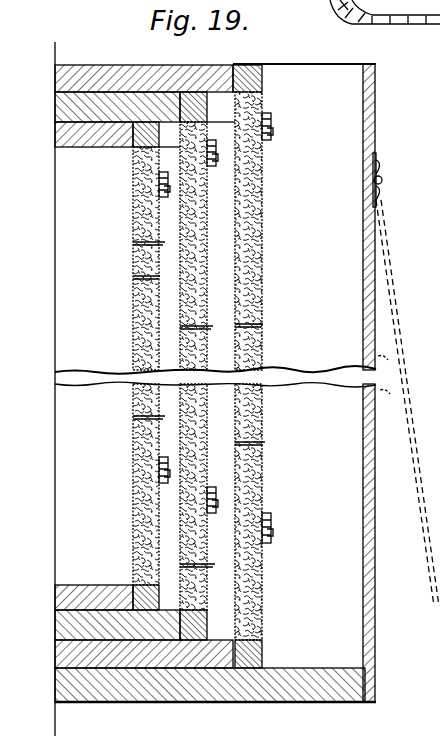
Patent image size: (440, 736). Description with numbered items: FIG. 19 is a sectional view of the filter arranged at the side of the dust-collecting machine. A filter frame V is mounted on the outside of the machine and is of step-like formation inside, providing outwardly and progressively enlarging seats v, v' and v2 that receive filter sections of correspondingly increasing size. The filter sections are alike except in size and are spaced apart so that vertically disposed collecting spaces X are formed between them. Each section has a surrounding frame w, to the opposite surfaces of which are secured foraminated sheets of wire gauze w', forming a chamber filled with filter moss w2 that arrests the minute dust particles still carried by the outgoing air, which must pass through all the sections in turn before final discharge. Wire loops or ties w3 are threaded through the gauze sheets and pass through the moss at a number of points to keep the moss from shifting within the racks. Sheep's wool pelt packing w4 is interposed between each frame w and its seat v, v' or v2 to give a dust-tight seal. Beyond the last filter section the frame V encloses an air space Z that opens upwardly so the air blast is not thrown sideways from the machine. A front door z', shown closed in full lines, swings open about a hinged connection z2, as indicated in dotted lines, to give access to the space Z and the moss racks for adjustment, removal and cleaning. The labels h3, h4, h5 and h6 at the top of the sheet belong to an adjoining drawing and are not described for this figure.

The filter frame V is at (56, 108).
The seat v is at (129, 147).
The seat v' is at (169, 136).
The seat v2 is at (234, 93).
The surrounding frame w is at (198, 120).
The wire gauze w' is at (191, 366).
The filter moss w2 is at (133, 277).
The ties w3 is at (133, 244).
The sheep's wool pelt packing w4 is at (133, 588).
The collecting spaces X is at (166, 340).
The air space Z is at (304, 383).
The front door z' is at (407, 403).
The hinged connection z2 is at (382, 180).
The part of adjacent figure h3 is at (388, 20).
The part of adjacent figure h4 is at (342, 22).
The part of adjacent figure h5 is at (400, 6).
The part of adjacent figure h6 is at (336, 12).